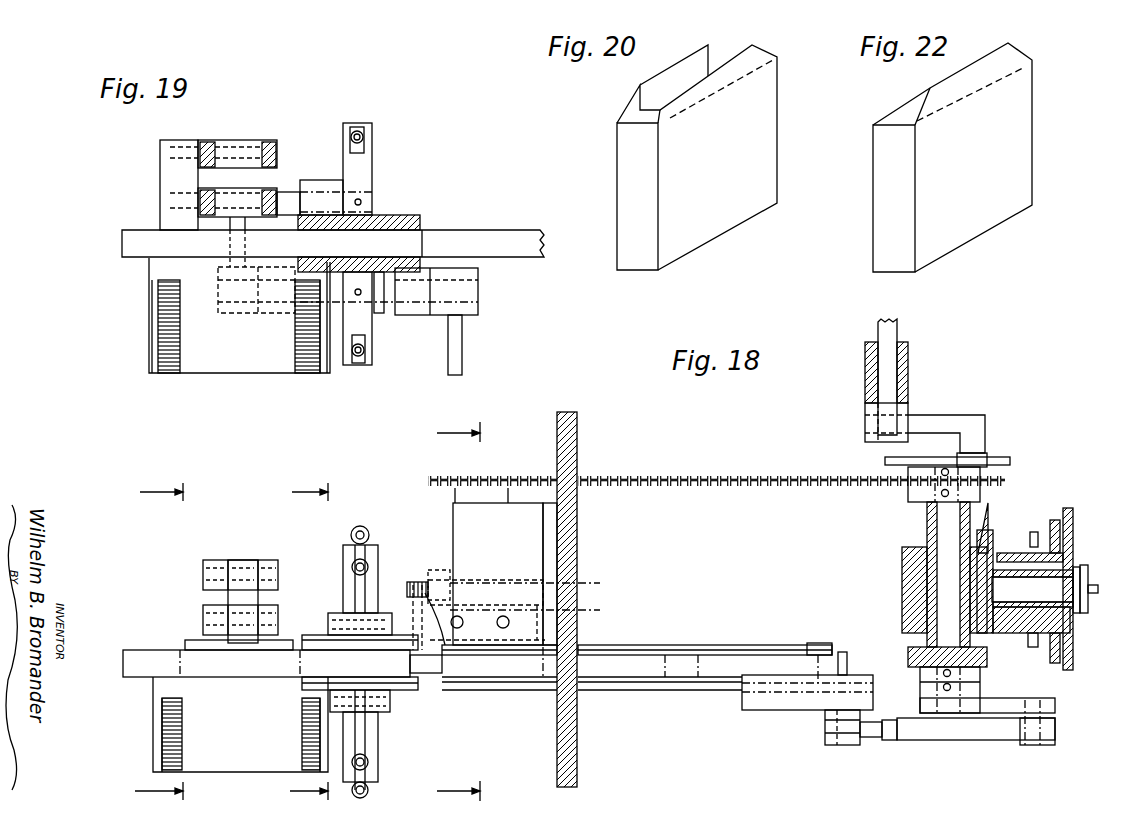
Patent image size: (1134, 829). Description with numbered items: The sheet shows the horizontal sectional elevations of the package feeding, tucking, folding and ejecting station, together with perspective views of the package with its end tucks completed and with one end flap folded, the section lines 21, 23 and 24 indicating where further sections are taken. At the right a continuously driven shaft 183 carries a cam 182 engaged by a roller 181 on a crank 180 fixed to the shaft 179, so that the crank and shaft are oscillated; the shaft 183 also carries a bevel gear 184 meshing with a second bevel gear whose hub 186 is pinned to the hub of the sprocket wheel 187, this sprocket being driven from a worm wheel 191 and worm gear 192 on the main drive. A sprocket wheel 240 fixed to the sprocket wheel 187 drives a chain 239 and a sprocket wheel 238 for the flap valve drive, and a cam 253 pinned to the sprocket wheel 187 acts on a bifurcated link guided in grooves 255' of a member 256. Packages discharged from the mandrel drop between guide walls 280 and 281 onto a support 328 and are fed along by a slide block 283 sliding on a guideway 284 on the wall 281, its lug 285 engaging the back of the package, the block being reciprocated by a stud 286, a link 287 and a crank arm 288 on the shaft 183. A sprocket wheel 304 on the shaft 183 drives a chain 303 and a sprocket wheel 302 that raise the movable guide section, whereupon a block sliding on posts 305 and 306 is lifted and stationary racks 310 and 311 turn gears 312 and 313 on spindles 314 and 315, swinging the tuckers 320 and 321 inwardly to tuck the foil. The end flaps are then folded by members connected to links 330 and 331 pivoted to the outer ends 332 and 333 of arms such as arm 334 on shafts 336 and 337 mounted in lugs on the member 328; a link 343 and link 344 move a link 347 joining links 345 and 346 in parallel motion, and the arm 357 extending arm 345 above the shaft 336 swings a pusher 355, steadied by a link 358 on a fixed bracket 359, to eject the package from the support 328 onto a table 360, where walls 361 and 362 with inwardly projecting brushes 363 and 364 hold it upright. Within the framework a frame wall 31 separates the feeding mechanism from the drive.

In FIG. 18, the section line 21 is at (458, 606).
In FIG. 18, the section line 23 is at (292, 641).
In FIG. 18, the section line 24 is at (144, 641).
In FIG. 18, the frame wall 31 is at (578, 774).
In FIG. 18, the shaft 179 is at (893, 328).
In FIG. 18, the crank 180 is at (953, 424).
In FIG. 18, the roller 181 is at (988, 453).
In FIG. 18, the cam 182 is at (1010, 460).
In FIG. 18, the shaft 183 is at (947, 523).
In FIG. 18, the bevel gear 184 is at (907, 660).
In FIG. 18, the hub 186 is at (1036, 512).
In FIG. 18, the sprocket wheel 187 is at (1056, 662).
In FIG. 18, the worm wheel 191 is at (457, 655).
In FIG. 18, the worm gear 192 is at (536, 668).
In FIG. 19, the sprocket wheel 238 is at (328, 185).
In FIG. 19, the chain 239 is at (418, 277).
In FIG. 18, the sprocket wheel 240 is at (1017, 517).
In FIG. 18, the cam 253 is at (1073, 520).
In FIG. 18, the grooves 255' is at (1047, 588).
In FIG. 18, the member 256 is at (1089, 586).
In FIG. 18, the guide wall 280 is at (740, 645).
In FIG. 18, the guide wall 281 is at (695, 690).
In FIG. 18, the slide block 283 is at (780, 700).
In FIG. 18, the guideway 284 is at (650, 690).
In FIG. 18, the lug 285 is at (843, 652).
In FIG. 18, the stud 286 is at (843, 745).
In FIG. 18, the link 287 is at (872, 737).
In FIG. 18, the crank arm 288 is at (998, 712).
In FIG. 18, the sprocket wheel 302 is at (498, 476).
In FIG. 18, the chain 303 is at (788, 476).
In FIG. 18, the sprocket wheel 304 is at (1006, 481).
In FIG. 18, the post 305 is at (460, 629).
In FIG. 18, the post 306 is at (503, 629).
In FIG. 18, the stationary rack 310 is at (443, 568).
In FIG. 18, the stationary rack 311 is at (523, 572).
In FIG. 18, the gear 312 is at (408, 582).
In FIG. 18, the gear 313 is at (600, 584).
In FIG. 18, the spindle 314 is at (425, 605).
In FIG. 18, the spindle 315 is at (600, 610).
In FIG. 18, the tucker 320 is at (410, 666).
In FIG. 18, the tucker 321 is at (490, 672).
In FIG. 19, the support 328 is at (122, 241).
In FIG. 18, the support 328 is at (126, 650).
In FIG. 19, the link 330 is at (365, 137).
In FIG. 18, the link 330 is at (363, 583).
In FIG. 19, the link 331 is at (358, 362).
In FIG. 18, the link 331 is at (362, 738).
In FIG. 19, the outer end 332 is at (370, 123).
In FIG. 19, the outer end 333 is at (363, 318).
In FIG. 19, the arm 334 is at (372, 167).
In FIG. 18, the arm 334 is at (360, 667).
In FIG. 19, the shaft 336 is at (290, 191).
In FIG. 18, the shaft 336 is at (243, 593).
In FIG. 19, the shaft 337 is at (382, 292).
In FIG. 19, the link 343 is at (473, 309).
In FIG. 19, the link 344 is at (462, 358).
In FIG. 19, the link 345 is at (248, 222).
In FIG. 19, the link 346 is at (241, 318).
In FIG. 19, the link 347 is at (232, 225).
In FIG. 18, the pusher 355 is at (186, 641).
In FIG. 19, the arm 357 is at (267, 195).
In FIG. 18, the arm 357 is at (205, 607).
In FIG. 19, the link 358 is at (209, 140).
In FIG. 18, the link 358 is at (210, 559).
In FIG. 19, the fixed bracket 359 is at (160, 184).
In FIG. 19, the table 360 is at (232, 363).
In FIG. 18, the table 360 is at (255, 735).
In FIG. 19, the wall 361 is at (149, 322).
In FIG. 18, the wall 361 is at (154, 741).
In FIG. 19, the wall 362 is at (330, 355).
In FIG. 18, the wall 362 is at (320, 747).
In FIG. 19, the brush 363 is at (178, 311).
In FIG. 18, the brush 363 is at (180, 699).
In FIG. 19, the brush 364 is at (300, 337).
In FIG. 18, the brush 364 is at (302, 698).